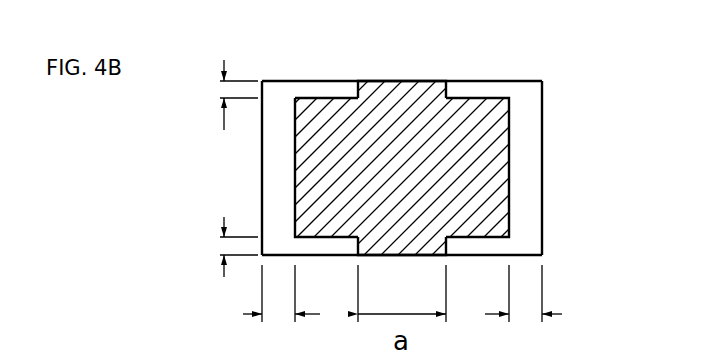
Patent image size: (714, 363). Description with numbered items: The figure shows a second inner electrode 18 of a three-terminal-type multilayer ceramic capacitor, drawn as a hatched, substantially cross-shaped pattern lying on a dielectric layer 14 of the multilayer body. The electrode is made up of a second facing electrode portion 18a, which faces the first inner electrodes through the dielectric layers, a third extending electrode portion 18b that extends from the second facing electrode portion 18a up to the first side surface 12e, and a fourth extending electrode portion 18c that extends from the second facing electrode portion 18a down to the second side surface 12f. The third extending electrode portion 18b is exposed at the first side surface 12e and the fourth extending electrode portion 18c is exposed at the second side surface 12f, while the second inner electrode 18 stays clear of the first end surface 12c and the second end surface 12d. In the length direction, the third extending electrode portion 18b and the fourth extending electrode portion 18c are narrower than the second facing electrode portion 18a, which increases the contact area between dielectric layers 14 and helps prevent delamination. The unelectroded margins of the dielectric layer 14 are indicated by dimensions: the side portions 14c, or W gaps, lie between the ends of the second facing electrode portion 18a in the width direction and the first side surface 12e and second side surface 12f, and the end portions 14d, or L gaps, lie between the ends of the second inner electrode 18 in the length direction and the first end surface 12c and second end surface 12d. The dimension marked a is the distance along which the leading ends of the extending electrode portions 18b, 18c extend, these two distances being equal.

The second inner electrode 18 is at (397, 160).
The second facing electrode portion 18a is at (422, 167).
The third extending electrode portion 18b is at (398, 94).
The fourth extending electrode portion 18c is at (405, 246).
The dielectric layer 14 is at (404, 158).
The side portion 14c is at (212, 168).
The end portion 14d is at (402, 311).
The first end surface 12c is at (262, 164).
The second end surface 12d is at (545, 203).
The first side surface 12e is at (487, 81).
The second side surface 12f is at (487, 256).